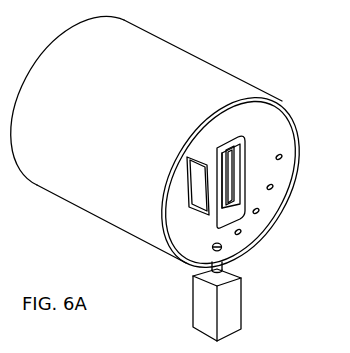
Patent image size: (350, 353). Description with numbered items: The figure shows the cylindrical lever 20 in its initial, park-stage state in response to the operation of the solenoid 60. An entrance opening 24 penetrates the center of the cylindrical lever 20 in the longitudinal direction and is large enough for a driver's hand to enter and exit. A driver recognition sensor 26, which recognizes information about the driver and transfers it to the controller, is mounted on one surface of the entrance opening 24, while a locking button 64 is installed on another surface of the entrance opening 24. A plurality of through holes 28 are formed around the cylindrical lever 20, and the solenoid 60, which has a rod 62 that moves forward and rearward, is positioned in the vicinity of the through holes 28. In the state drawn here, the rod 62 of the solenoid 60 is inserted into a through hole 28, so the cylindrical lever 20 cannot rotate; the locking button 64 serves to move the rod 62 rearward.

The cylindrical lever 20 is at (198, 82).
The entrance opening 24 is at (229, 177).
The driver recognition sensor 26 is at (200, 197).
The through holes 28 is at (259, 211).
The solenoid 60 is at (227, 307).
The rod 62 is at (223, 270).
The locking button 64 is at (229, 157).